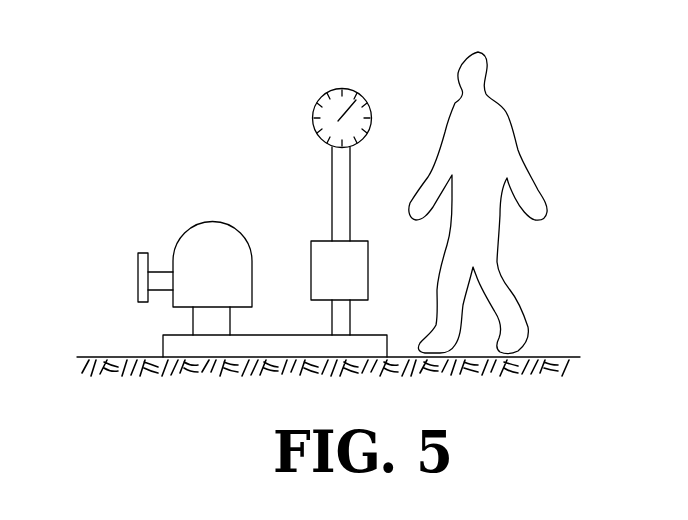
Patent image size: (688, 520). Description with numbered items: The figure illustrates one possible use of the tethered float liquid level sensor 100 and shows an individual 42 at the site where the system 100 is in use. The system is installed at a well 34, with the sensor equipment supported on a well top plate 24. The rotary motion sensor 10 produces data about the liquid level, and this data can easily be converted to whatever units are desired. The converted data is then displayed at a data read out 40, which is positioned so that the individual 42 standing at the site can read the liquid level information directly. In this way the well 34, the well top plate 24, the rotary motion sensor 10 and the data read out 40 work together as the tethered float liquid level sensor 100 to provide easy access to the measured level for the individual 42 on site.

The tethered float liquid level sensor 100 is at (282, 167).
The rotary motion sensor 10 is at (358, 290).
The well top plate 24 is at (174, 334).
The well 34 is at (228, 283).
The data read out 40 is at (333, 88).
The individual 42 is at (487, 60).